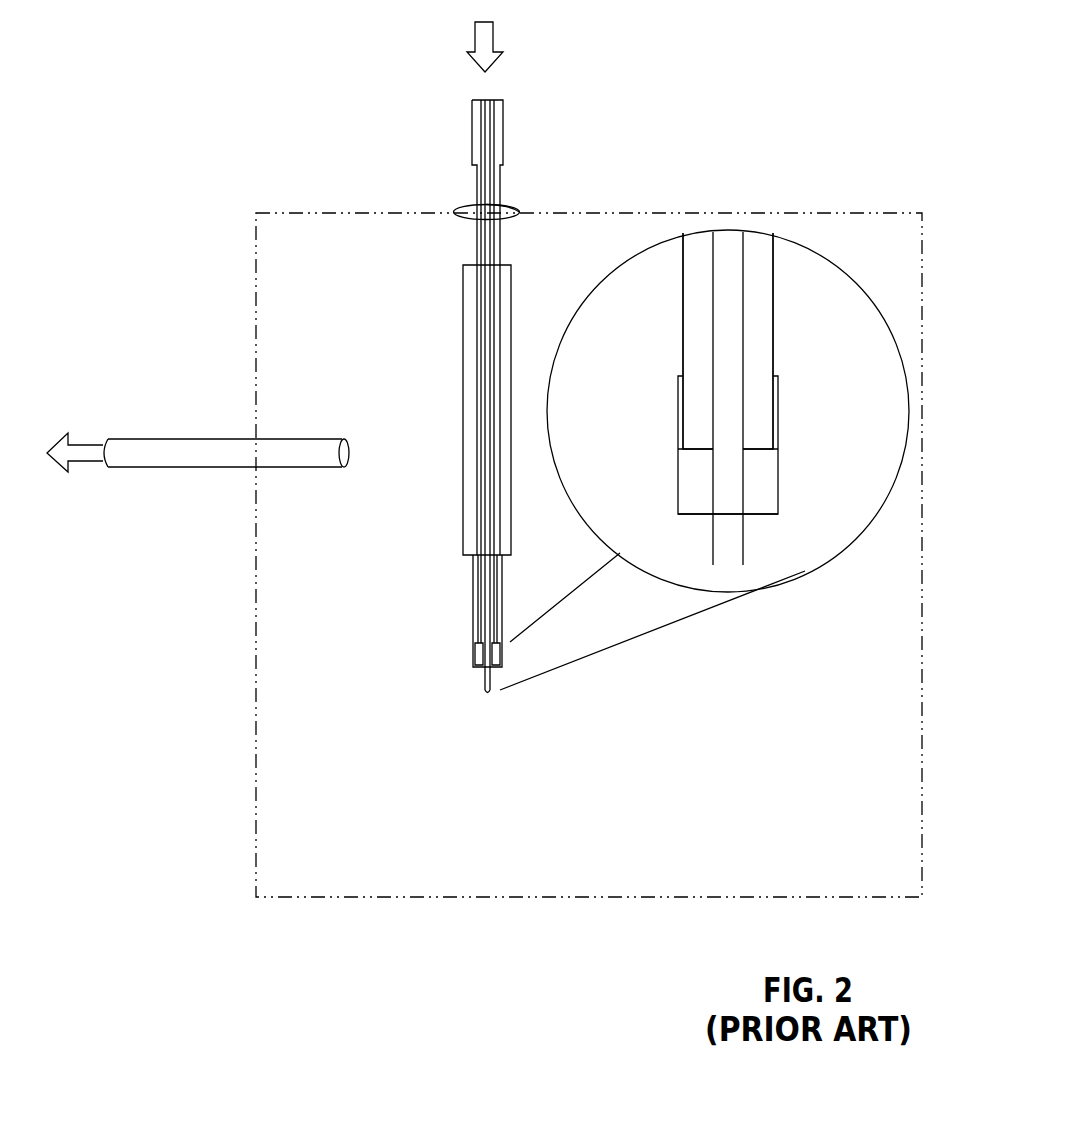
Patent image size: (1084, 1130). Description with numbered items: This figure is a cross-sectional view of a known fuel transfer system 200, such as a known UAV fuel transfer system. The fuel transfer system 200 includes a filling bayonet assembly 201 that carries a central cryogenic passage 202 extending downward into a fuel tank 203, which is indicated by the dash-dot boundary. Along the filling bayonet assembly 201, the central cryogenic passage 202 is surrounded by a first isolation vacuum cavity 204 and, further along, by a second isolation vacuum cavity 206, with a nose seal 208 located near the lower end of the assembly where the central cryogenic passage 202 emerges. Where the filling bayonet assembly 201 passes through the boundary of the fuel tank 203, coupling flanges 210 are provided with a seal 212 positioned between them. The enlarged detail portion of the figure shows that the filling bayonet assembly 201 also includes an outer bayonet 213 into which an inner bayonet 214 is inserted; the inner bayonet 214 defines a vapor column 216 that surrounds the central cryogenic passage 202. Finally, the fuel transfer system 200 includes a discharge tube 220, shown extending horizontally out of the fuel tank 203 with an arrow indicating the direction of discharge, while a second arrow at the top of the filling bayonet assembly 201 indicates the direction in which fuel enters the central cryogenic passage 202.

The fuel transfer system 200 is at (882, 73).
The filling bayonet assembly 201 is at (433, 118).
The central cryogenic passage 202 is at (483, 105).
The fuel tank 203 is at (845, 213).
The first isolation vacuum cavity 204 is at (495, 158).
The second isolation vacuum cavity 206 is at (465, 365).
The nose seal 208 is at (477, 640).
The coupling flanges 210 is at (457, 207).
The seal 212 is at (513, 207).
The outer bayonet 213 is at (760, 490).
The inner bayonet 214 is at (773, 352).
The vapor column 216 is at (761, 418).
The discharge tube 220 is at (123, 438).